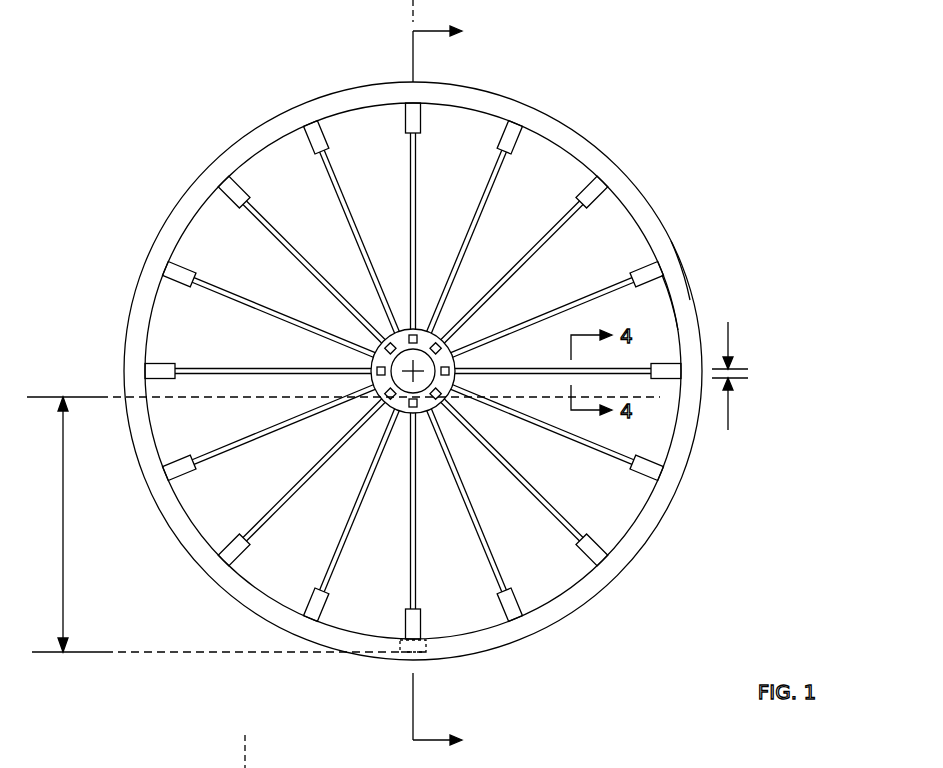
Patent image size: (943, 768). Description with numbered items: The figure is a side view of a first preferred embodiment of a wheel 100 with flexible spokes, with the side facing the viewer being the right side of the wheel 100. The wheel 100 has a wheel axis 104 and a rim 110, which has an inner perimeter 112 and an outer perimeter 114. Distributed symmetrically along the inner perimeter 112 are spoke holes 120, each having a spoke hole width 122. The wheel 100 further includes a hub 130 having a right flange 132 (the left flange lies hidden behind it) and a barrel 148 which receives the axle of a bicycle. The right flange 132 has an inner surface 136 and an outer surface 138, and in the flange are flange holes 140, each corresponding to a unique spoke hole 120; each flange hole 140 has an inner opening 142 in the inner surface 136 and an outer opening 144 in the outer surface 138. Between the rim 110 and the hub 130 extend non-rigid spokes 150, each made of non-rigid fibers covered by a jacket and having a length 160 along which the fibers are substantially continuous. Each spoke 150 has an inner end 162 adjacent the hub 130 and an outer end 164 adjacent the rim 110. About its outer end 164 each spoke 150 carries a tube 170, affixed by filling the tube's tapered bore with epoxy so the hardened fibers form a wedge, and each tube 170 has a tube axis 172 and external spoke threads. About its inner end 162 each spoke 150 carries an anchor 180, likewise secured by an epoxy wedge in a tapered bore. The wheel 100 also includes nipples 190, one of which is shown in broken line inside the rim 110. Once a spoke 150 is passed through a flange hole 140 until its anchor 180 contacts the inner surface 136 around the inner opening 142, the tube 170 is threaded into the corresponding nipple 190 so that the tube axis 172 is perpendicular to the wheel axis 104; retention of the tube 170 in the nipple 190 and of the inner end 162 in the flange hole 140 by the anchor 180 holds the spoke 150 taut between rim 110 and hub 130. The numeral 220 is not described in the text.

The wheel 100 is at (715, 140).
The wheel axis 104 is at (445, 345).
The rim 110 is at (192, 200).
The inner perimeter 112 is at (671, 241).
The outer perimeter 114 is at (685, 276).
The spoke hole 120 is at (422, 637).
The spoke hole width 122 is at (728, 333).
The hub 130 is at (338, 218).
The right flange 132 is at (397, 333).
The inner surface 136 is at (410, 330).
The outer surface 138 is at (428, 400).
The flange hole 140 is at (372, 354).
The inner opening 142 is at (425, 415).
The outer opening 144 is at (440, 397).
The barrel 148 is at (432, 365).
The spoke 150 is at (353, 503).
The length 160 is at (63, 590).
The inner end 162 is at (430, 377).
The outer end 164 is at (632, 454).
The tube 170 is at (597, 555).
The tube axis 172 is at (372, 0).
The anchor 180 is at (433, 393).
The nipple 190 is at (417, 652).
The ground 220 is at (304, 751).